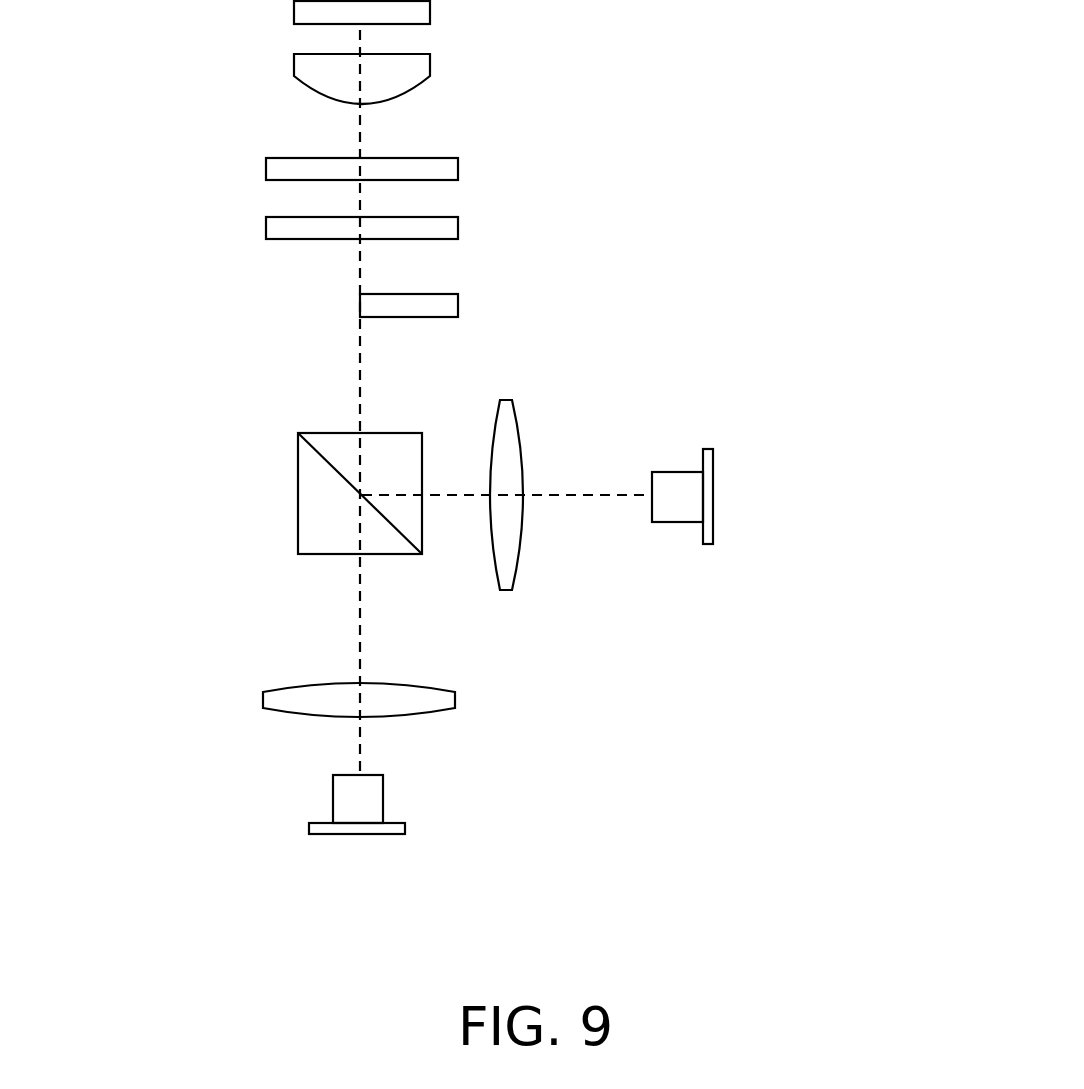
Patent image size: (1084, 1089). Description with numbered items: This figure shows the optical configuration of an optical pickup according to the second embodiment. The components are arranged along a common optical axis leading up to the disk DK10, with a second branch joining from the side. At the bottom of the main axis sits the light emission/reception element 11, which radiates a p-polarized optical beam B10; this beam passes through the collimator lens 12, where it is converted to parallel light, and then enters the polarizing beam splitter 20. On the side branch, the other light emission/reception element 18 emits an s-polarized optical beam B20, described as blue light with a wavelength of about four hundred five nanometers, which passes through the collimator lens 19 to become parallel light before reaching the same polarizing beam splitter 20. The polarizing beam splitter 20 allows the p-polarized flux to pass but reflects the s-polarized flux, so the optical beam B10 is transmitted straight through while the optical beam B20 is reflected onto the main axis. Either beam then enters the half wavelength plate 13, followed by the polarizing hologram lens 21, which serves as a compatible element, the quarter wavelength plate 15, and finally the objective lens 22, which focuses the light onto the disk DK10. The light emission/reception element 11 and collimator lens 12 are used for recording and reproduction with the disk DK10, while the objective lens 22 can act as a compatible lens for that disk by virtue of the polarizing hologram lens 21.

The disk DK10 is at (430, 12).
The objective lens 22 is at (430, 70).
The quarter wavelength plate 15 is at (458, 168).
The polarizing hologram lens 21 is at (458, 229).
The half wavelength plate 13 is at (458, 305).
The optical beam B10 is at (325, 648).
The optical beam B20 is at (568, 493).
The polarizing beam splitter 20 is at (298, 505).
The collimator lens 19 is at (506, 590).
The light emission/reception element 18 is at (713, 497).
The collimator lens 12 is at (455, 700).
The light emission/reception element 11 is at (355, 835).